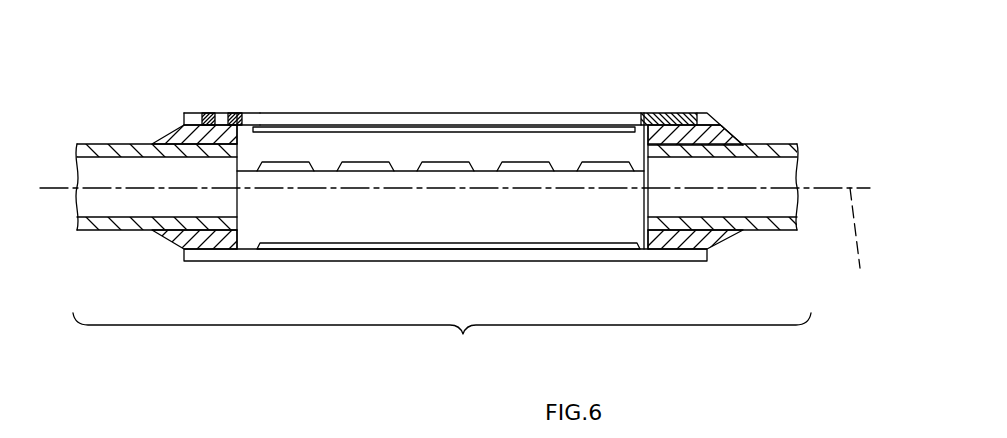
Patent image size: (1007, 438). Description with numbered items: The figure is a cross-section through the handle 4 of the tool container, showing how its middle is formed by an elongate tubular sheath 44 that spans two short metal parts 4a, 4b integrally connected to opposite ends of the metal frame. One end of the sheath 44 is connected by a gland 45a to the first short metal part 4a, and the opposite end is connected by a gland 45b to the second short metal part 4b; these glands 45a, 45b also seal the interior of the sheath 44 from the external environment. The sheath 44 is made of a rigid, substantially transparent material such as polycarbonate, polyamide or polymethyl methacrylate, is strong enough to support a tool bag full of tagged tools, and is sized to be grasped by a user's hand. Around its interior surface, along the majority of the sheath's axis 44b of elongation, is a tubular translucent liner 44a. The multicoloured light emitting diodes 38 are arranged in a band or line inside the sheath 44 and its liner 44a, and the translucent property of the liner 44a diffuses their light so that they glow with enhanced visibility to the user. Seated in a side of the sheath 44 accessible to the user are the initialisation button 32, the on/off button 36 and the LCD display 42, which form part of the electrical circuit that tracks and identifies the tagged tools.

The handle 4 is at (442, 338).
The first short metal part 4a is at (112, 143).
The second short metal part 4b is at (752, 145).
The initialisation button 32 is at (236, 113).
The on/off button 36 is at (209, 113).
The light emitting diodes 38 is at (593, 168).
The LCD display 42 is at (662, 114).
The tubular sheath 44 is at (613, 113).
The translucent liner 44a is at (522, 128).
The sheath axis 44b is at (866, 243).
The first gland 45a is at (167, 243).
The second gland 45b is at (718, 242).